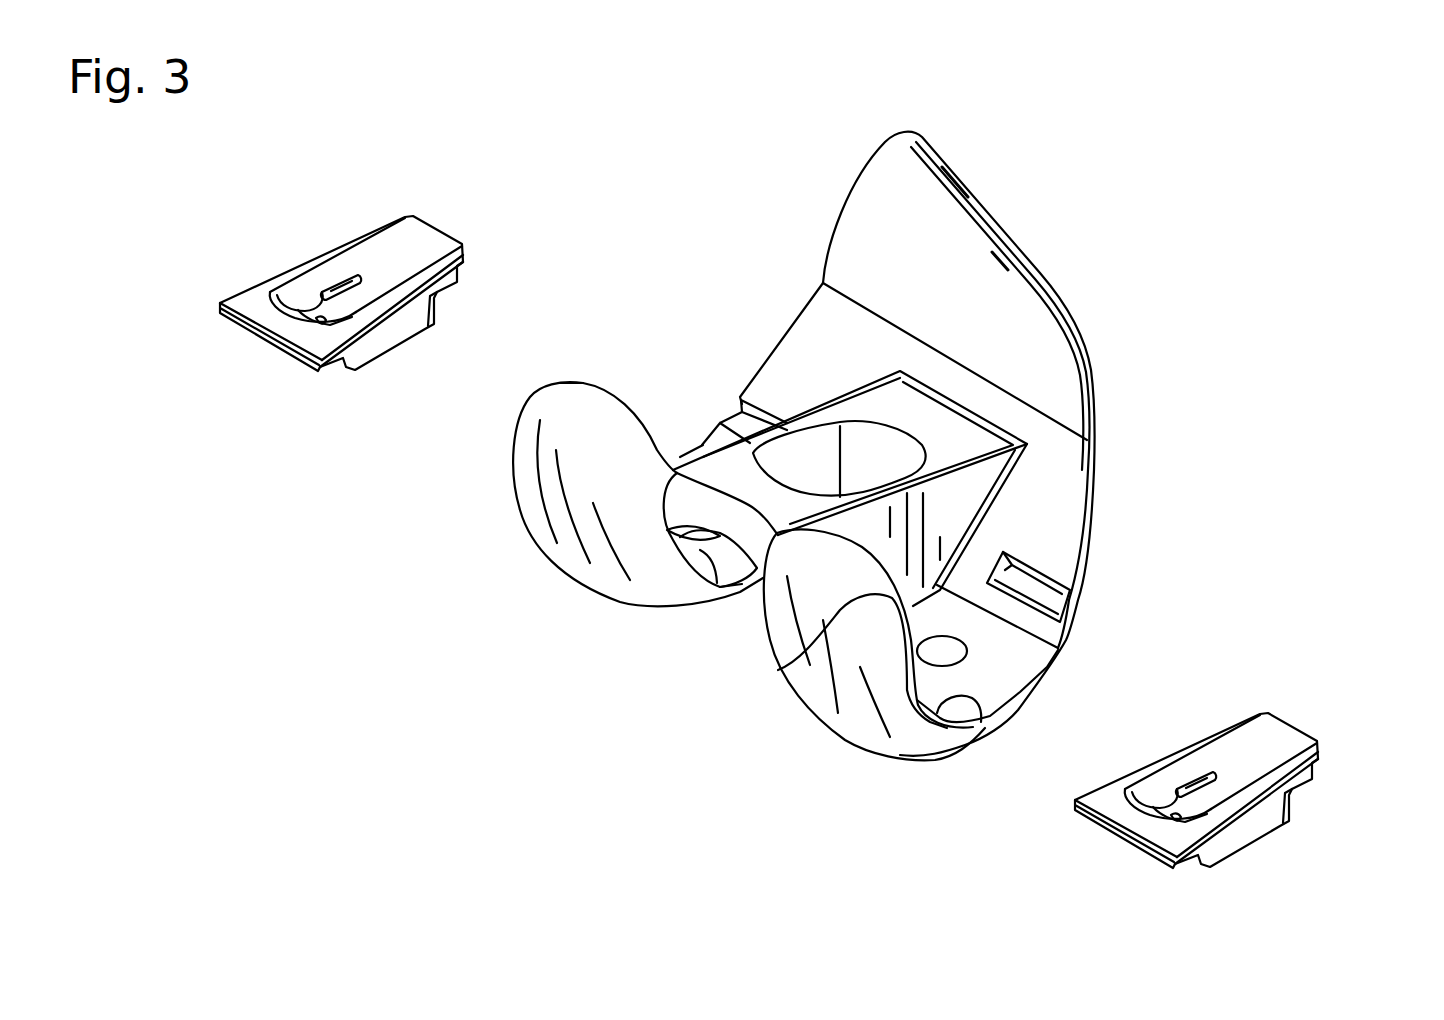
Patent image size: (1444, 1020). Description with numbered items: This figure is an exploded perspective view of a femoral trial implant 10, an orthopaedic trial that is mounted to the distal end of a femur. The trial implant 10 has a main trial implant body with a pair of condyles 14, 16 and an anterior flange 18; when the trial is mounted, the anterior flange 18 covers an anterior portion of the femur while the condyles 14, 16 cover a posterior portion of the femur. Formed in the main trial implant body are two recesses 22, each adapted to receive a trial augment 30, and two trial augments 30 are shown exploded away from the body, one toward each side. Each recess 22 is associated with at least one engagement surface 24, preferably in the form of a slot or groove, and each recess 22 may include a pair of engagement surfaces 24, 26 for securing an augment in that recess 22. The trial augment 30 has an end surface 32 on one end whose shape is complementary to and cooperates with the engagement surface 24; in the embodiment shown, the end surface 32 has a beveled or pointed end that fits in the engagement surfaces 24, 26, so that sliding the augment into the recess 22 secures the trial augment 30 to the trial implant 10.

The femoral trial implant 10 is at (530, 535).
The condyle 14 is at (778, 671).
The condyle 16 is at (582, 380).
The anterior flange 18 is at (981, 193).
The recess 22 is at (683, 460).
The engagement surface 24 is at (739, 398).
The engagement surface 26 is at (983, 737).
The trial augment 30 is at (246, 276).
The end surface 32 is at (279, 352).